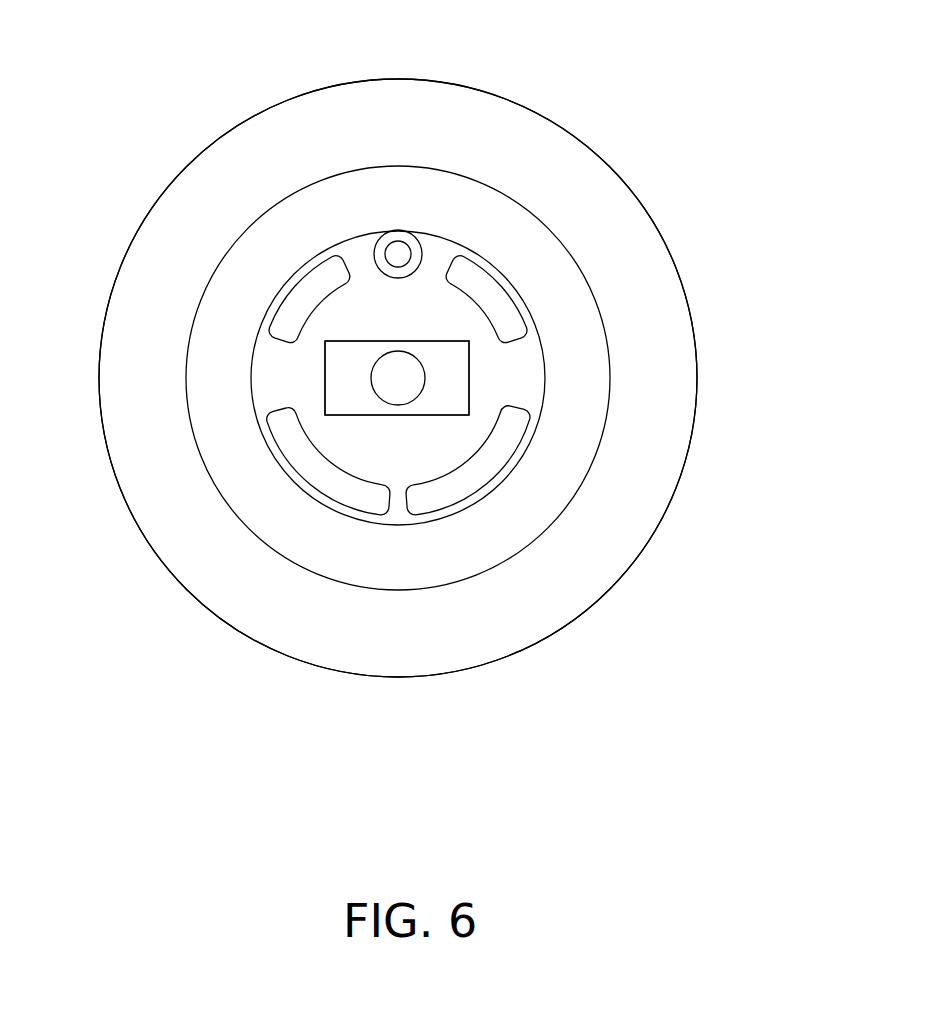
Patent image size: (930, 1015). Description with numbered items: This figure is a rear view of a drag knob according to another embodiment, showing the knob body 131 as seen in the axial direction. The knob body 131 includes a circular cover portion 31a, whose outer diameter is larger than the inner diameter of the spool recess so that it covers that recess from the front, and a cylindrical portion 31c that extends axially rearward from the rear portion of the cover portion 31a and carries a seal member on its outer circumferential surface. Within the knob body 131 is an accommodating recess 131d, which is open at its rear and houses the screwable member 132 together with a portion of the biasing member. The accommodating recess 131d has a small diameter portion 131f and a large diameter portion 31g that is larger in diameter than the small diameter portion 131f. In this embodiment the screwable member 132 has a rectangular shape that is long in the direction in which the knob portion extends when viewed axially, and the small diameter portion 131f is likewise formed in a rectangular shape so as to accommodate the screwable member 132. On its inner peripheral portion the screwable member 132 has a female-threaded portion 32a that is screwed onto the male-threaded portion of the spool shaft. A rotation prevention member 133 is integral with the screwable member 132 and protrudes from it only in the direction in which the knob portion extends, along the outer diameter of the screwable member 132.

The knob body 131 is at (212, 132).
The cover portion 31a is at (603, 182).
The cylindrical portion 31c is at (517, 237).
The accommodating recess 131d is at (541, 364).
The small diameter portion 131f is at (362, 413).
The large diameter portion 31g is at (512, 412).
The screwable member 132 is at (313, 384).
The rotation prevention member 133 is at (447, 341).
The female-threaded portion 32a is at (407, 400).